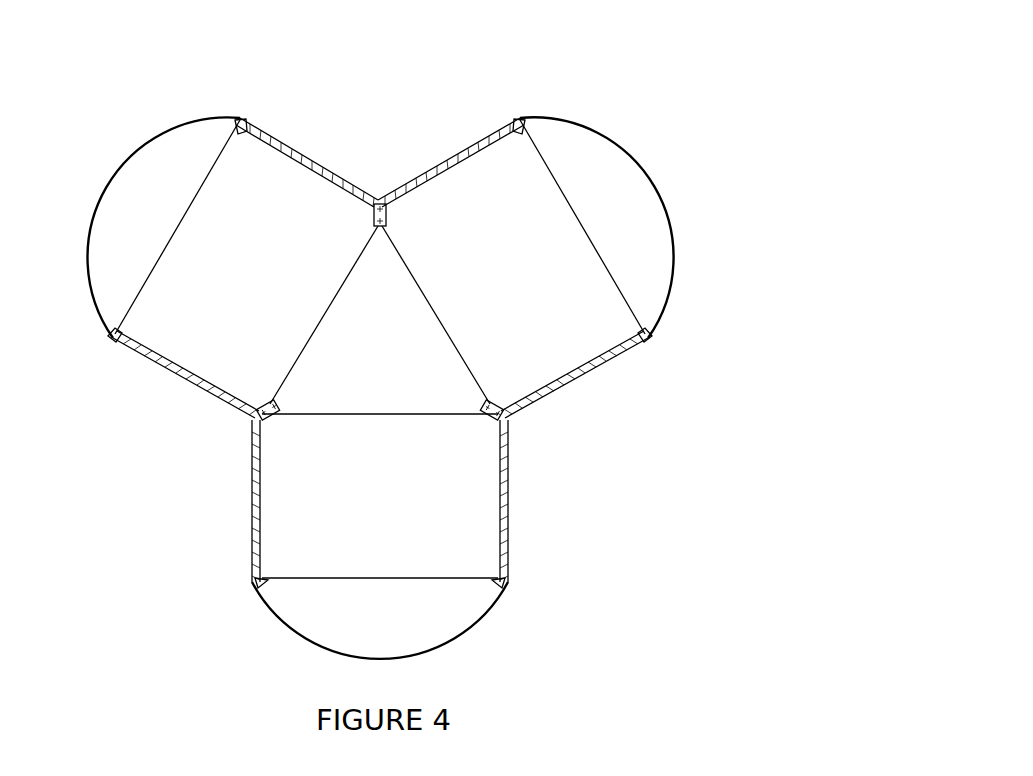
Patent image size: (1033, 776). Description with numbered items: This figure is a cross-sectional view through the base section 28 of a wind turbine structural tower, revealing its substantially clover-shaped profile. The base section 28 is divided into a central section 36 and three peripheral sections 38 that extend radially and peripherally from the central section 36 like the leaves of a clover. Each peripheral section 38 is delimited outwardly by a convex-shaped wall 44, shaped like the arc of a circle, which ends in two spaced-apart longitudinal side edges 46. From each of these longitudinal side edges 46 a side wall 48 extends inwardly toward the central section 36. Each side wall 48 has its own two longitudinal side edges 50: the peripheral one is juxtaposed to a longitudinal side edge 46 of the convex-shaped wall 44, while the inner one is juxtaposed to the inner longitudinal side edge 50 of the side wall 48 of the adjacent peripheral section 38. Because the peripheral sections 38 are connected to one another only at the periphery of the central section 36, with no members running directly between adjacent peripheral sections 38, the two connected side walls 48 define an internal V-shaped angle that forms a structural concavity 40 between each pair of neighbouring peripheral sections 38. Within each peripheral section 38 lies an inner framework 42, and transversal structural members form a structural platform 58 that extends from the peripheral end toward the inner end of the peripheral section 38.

The base section 28 is at (655, 580).
The central section 36 is at (383, 340).
The peripheral sections 38 is at (228, 342).
The structural concavities 40 is at (388, 160).
The inner framework 42 is at (305, 577).
The convex-shaped wall 44 is at (117, 183).
The longitudinal side edges 46 is at (240, 117).
The side walls 48 is at (274, 136).
The longitudinal side edges 50 is at (240, 117).
The structural platform 58 is at (262, 284).